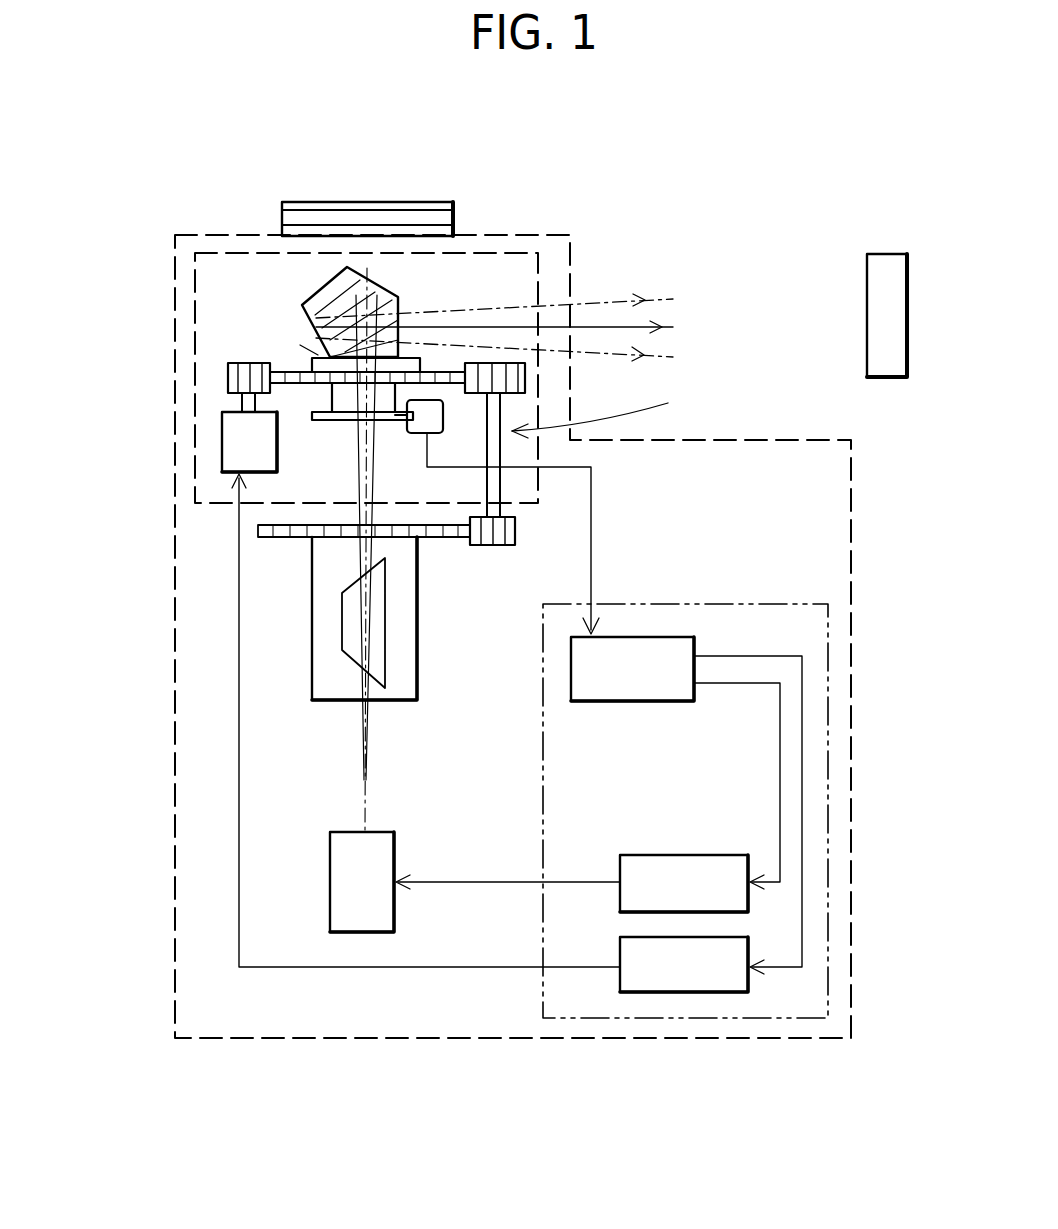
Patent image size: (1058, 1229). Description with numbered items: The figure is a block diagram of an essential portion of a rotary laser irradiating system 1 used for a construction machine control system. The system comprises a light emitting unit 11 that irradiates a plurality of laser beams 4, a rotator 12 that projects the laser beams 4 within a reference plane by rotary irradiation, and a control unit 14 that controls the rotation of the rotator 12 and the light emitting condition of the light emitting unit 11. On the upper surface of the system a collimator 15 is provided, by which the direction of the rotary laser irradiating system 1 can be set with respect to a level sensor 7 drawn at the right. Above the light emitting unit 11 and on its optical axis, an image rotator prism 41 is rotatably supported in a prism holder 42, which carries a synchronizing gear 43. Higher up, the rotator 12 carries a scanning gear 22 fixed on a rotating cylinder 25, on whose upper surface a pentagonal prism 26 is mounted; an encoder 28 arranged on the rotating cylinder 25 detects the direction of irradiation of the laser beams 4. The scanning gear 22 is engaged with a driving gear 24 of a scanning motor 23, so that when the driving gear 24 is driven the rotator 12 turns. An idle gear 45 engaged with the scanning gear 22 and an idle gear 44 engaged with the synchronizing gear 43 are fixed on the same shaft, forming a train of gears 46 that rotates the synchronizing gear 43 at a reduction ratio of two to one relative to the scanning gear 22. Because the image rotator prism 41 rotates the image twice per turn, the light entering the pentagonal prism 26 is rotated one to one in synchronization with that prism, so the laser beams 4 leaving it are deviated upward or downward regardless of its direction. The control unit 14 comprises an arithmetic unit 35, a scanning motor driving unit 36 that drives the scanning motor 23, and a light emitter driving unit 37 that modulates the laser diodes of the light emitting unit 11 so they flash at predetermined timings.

The rotary laser irradiating system 1 is at (572, 283).
The laser beams 4 is at (640, 327).
The level sensor 7 is at (867, 320).
The light emitting unit 11 is at (330, 872).
The rotator 12 is at (195, 350).
The control unit 14 is at (812, 604).
The collimator 15 is at (400, 202).
The scanning gear 22 is at (312, 365).
The scanning motor 23 is at (222, 445).
The driving gear 24 is at (228, 375).
The rotating cylinder 25 is at (312, 354).
The pentagonal prism 26 is at (327, 283).
The encoder 28 is at (418, 433).
The arithmetic unit 35 is at (648, 637).
The scanning motor driving unit 36 is at (620, 953).
The light emitter driving unit 37 is at (688, 855).
The image rotator prism 41 is at (342, 631).
The prism holder 42 is at (312, 578).
The synchronizing gear 43 is at (258, 532).
The idle gear 44 is at (515, 532).
The idle gear 45 is at (525, 378).
The train of gears 46 is at (617, 409).